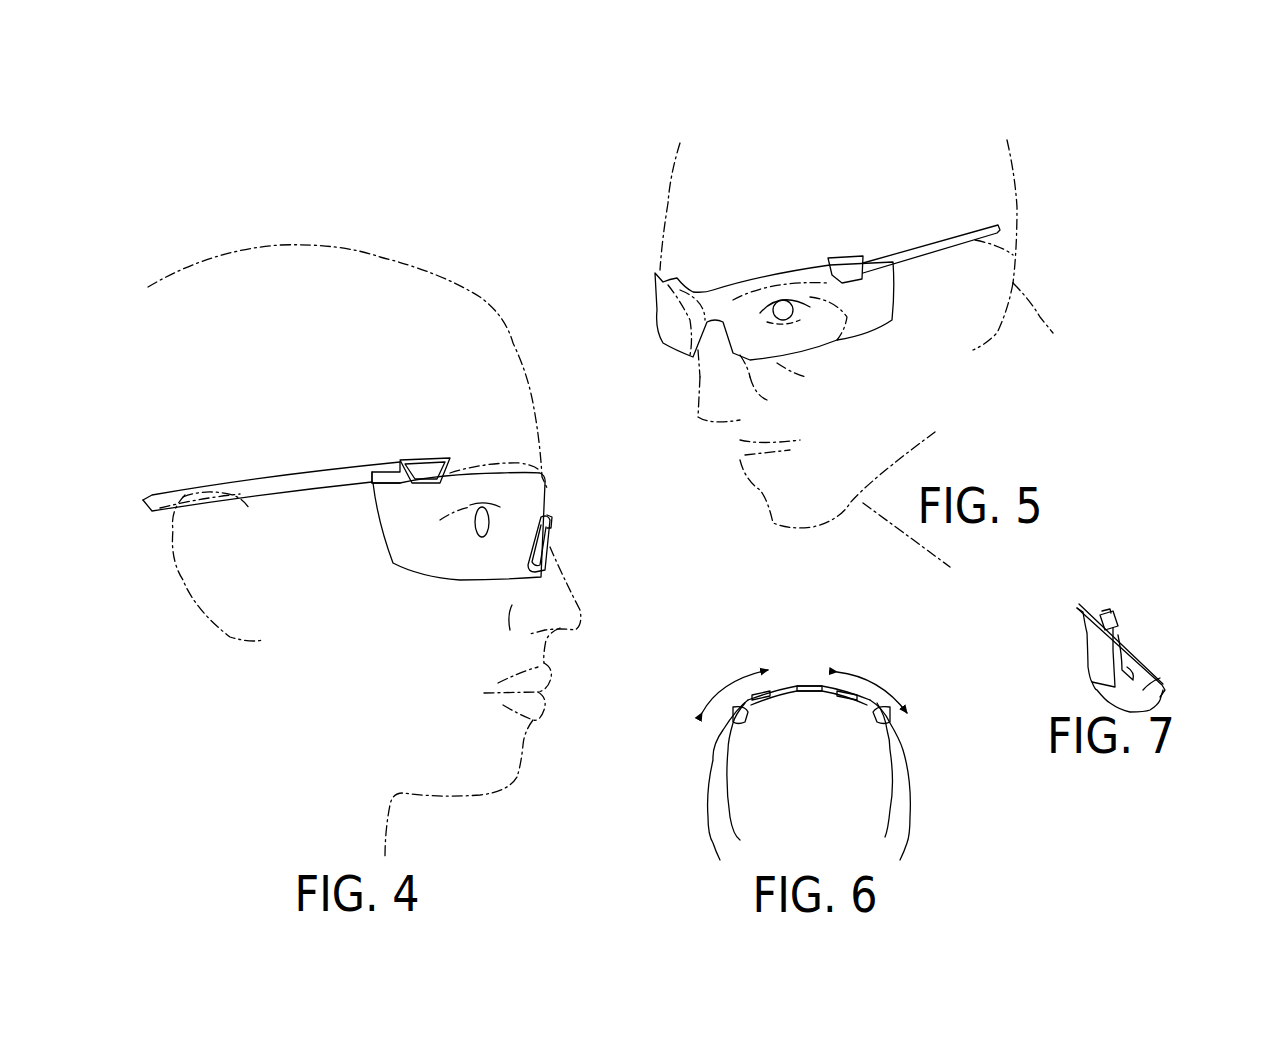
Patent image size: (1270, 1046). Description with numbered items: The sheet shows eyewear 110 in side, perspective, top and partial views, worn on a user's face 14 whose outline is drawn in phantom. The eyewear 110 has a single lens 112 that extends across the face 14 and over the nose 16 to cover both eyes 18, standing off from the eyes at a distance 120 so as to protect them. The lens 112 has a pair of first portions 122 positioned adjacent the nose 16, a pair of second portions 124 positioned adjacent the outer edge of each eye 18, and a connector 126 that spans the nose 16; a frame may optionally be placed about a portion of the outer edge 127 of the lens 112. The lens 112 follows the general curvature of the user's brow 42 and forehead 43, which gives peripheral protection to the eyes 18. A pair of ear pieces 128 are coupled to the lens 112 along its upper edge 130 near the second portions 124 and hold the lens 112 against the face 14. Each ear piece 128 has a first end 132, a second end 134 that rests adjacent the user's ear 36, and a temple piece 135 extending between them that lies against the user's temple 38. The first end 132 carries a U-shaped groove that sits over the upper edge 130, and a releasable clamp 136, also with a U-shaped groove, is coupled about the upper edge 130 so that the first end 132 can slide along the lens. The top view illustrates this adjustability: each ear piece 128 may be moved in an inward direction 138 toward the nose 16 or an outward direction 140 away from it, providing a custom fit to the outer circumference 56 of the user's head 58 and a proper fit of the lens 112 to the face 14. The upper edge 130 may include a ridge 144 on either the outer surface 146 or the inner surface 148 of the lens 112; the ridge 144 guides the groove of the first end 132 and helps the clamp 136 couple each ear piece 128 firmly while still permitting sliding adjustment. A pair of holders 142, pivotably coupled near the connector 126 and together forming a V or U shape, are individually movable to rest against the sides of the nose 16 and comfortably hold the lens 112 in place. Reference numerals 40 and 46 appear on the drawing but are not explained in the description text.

In FIG. 4, the face 14 is at (737, 503).
In FIG. 4, the nose 16 is at (582, 612).
In FIG. 5, the nose 16 is at (700, 420).
In FIG. 4, the eyes 18 is at (470, 523).
In FIG. 5, the eyes 18 is at (787, 317).
In FIG. 4, the ear 36 is at (197, 568).
In FIG. 5, the ear 36 is at (1013, 283).
In FIG. 4, the temple 38 is at (340, 530).
In FIG. 5, the temple 38 is at (935, 305).
In FIG. 4, the forehead 40 is at (563, 372).
In FIG. 4, the brow 42 is at (520, 470).
In FIG. 5, the brow 42 is at (780, 270).
In FIG. 4, the forehead 43 is at (546, 393).
In FIG. 4, the cheek region 46 is at (478, 638).
In FIG. 5, the cheek region 46 is at (812, 440).
In FIG. 4, the outer circumference 56 is at (203, 420).
In FIG. 5, the outer circumference 56 is at (995, 130).
In FIG. 4, the head 58 is at (233, 273).
In FIG. 5, the head 58 is at (910, 130).
In FIG. 5, the eyewear 110 is at (715, 172).
In FIG. 6, the eyewear 110 is at (803, 662).
In FIG. 4, the lens 112 is at (427, 575).
In FIG. 5, the lens 112 is at (675, 283).
In FIG. 6, the lens 112 is at (773, 703).
In FIG. 7, the lens 112 is at (1163, 680).
In FIG. 4, the distance 120 is at (548, 497).
In FIG. 5, the first portions 122 is at (743, 277).
In FIG. 5, the second portions 124 is at (857, 343).
In FIG. 5, the connector 126 is at (710, 292).
In FIG. 5, the outer edge 127 is at (777, 363).
In FIG. 5, the ear pieces 128 is at (935, 243).
In FIG. 6, the upper edge 130 is at (822, 682).
In FIG. 4, the first end 132 is at (383, 472).
In FIG. 5, the first end 132 is at (885, 256).
In FIG. 7, the first end 132 is at (1078, 607).
In FIG. 4, the second end 134 is at (150, 497).
In FIG. 5, the second end 134 is at (990, 223).
In FIG. 4, the temple piece 135 is at (254, 490).
In FIG. 5, the temple piece 135 is at (958, 248).
In FIG. 4, the releasable clamp 136 is at (425, 462).
In FIG. 5, the releasable clamp 136 is at (850, 258).
In FIG. 7, the releasable clamp 136 is at (1117, 610).
In FIG. 6, the inward direction 138 is at (730, 677).
In FIG. 6, the outward direction 140 is at (893, 690).
In FIG. 5, the holders 142 is at (700, 372).
In FIG. 7, the ridge 144 is at (1150, 657).
In FIG. 6, the outer surface 146 is at (800, 680).
In FIG. 6, the inner surface 148 is at (840, 703).